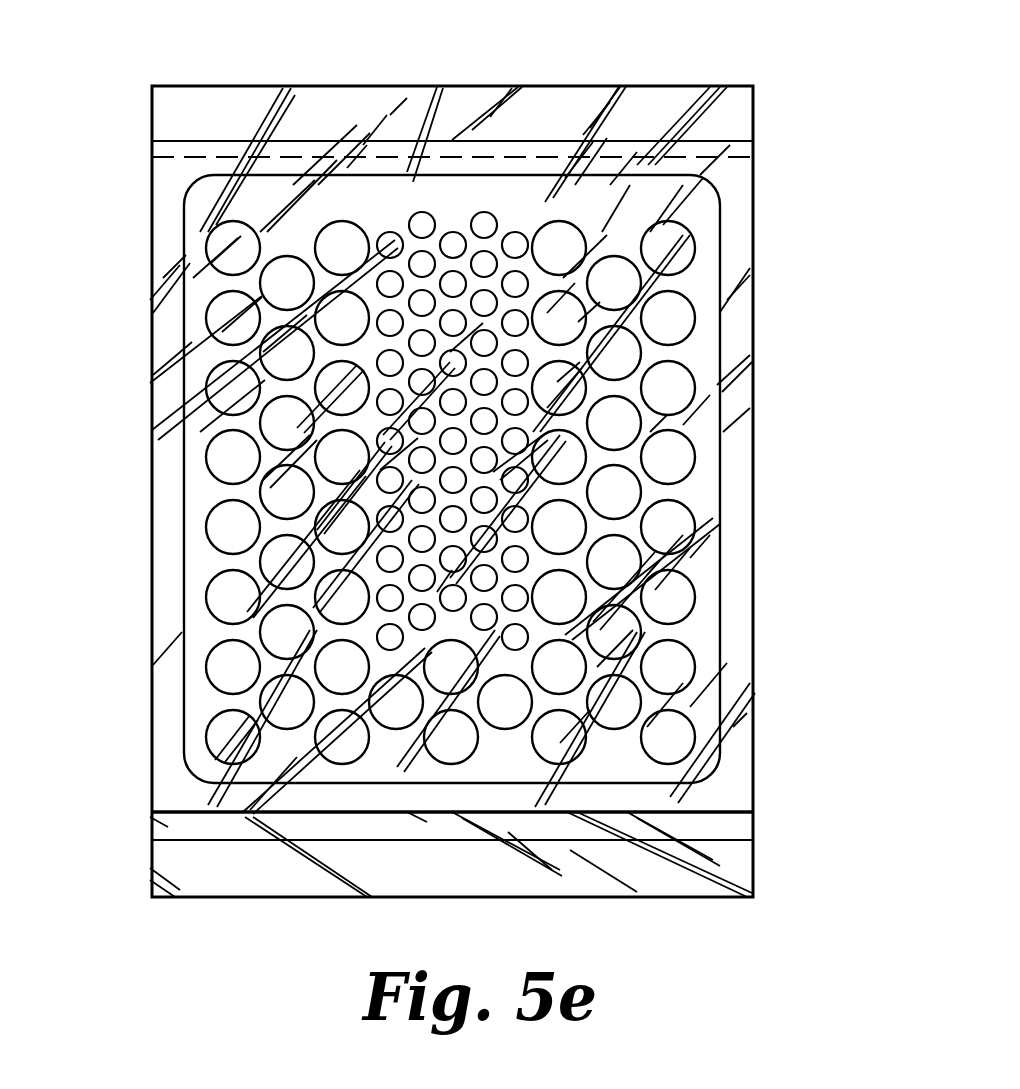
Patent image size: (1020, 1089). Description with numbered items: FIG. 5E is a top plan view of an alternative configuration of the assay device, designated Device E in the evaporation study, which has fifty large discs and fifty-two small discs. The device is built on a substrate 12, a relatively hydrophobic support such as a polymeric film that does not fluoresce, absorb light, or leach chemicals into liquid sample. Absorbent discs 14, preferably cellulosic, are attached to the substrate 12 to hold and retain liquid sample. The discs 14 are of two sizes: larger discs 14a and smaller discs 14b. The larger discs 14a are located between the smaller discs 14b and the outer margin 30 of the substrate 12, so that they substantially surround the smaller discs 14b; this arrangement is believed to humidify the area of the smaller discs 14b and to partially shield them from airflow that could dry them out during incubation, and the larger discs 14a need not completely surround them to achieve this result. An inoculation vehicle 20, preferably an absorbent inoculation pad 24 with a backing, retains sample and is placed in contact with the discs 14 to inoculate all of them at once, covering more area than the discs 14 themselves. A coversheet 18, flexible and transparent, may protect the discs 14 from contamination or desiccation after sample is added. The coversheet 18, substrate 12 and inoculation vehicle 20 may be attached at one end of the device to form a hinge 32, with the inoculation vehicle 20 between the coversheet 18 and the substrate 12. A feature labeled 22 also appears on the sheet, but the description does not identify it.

The substrate 12 is at (737, 587).
The absorbent discs 14 is at (700, 230).
The larger discs 14a is at (677, 503).
The smaller discs 14b is at (421, 213).
The coversheet 18 is at (740, 818).
The inoculation vehicle 20 is at (191, 513).
The fold line 22 is at (194, 157).
The inoculation pad 24 is at (195, 322).
The outer margin 30 is at (163, 607).
The hinge 32 is at (545, 141).